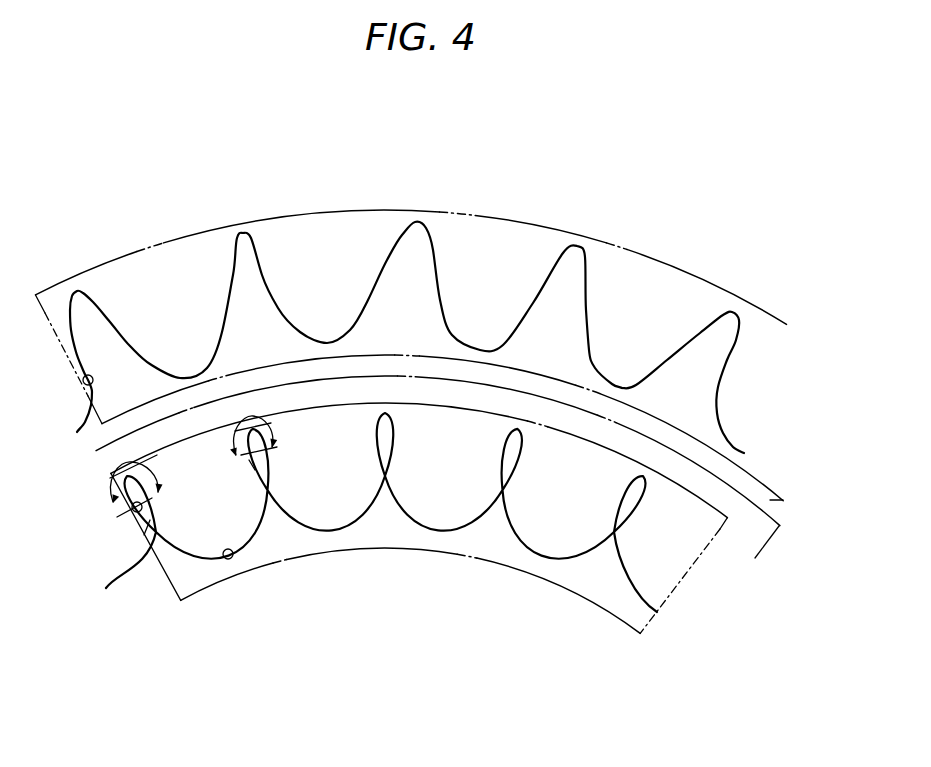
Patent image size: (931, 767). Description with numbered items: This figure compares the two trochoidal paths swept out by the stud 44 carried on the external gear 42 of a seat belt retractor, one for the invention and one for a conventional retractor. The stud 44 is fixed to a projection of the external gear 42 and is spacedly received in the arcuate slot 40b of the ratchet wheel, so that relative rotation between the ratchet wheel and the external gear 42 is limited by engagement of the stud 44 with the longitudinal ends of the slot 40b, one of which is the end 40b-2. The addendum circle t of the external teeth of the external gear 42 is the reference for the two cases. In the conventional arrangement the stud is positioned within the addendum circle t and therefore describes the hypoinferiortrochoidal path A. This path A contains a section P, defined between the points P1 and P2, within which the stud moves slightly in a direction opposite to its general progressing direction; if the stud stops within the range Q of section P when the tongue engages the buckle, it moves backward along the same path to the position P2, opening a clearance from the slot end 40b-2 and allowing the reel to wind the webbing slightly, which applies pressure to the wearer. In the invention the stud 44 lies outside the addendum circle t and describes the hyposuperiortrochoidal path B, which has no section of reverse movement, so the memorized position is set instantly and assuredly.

The arcuate slot 40b is at (163, 240).
The longitudinal end of the slot 40b-2 is at (45, 298).
The external gear 42 is at (757, 528).
The addendum circle t is at (753, 503).
The stud 44 is at (93, 378).
The hyposuperiortrochoidal path B is at (720, 400).
The hypoinferiortrochoidal path A is at (632, 577).
The range Q is at (112, 500).
The section P is at (124, 483).
The section starting point P1 is at (144, 535).
The section end point P2 is at (157, 503).